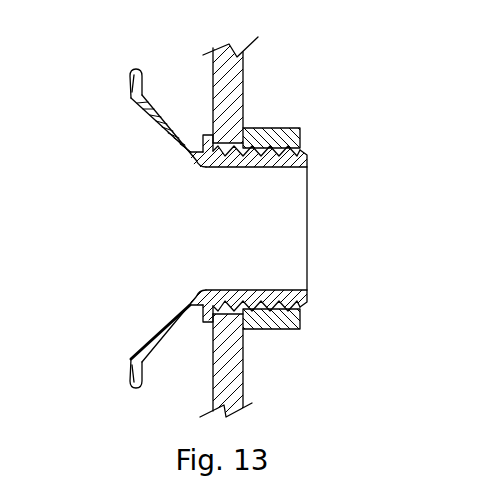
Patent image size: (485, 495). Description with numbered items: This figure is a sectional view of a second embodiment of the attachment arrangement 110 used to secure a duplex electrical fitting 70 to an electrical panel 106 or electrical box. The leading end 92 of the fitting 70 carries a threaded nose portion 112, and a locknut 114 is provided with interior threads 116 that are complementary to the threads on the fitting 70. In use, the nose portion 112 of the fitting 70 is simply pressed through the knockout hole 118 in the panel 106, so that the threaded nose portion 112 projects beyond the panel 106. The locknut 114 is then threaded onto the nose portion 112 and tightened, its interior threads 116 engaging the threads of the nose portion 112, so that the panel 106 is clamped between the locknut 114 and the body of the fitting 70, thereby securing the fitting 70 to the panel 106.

The fitting 70 is at (130, 90).
The leading end 92 is at (308, 218).
The electrical panel 106 is at (240, 66).
The attachment arrangement 110 is at (290, 353).
The threaded nose portion 112 is at (264, 160).
The locknut 114 is at (277, 129).
The interior threads 116 is at (301, 130).
The knockout hole 118 is at (220, 303).